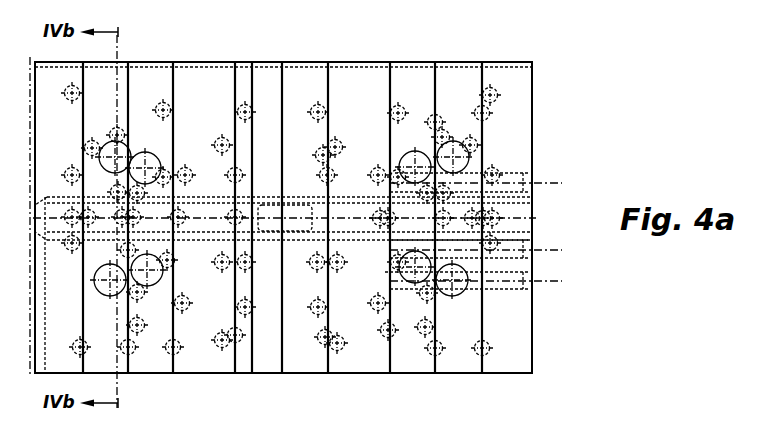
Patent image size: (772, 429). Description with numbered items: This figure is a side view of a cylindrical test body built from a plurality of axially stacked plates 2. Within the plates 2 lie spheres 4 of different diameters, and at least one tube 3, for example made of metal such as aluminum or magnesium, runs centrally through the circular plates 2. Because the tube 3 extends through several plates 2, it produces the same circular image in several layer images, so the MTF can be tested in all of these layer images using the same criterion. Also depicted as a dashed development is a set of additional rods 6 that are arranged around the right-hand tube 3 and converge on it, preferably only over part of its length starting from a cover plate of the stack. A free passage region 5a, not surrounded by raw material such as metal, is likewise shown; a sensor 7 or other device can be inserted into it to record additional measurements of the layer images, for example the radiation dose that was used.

The plate 2 is at (342, 80).
The tube 3 is at (214, 195).
The spheres 4 is at (152, 155).
The free passage region 5a is at (295, 203).
The additional rods 6 is at (508, 173).
The sensor 7 is at (267, 233).